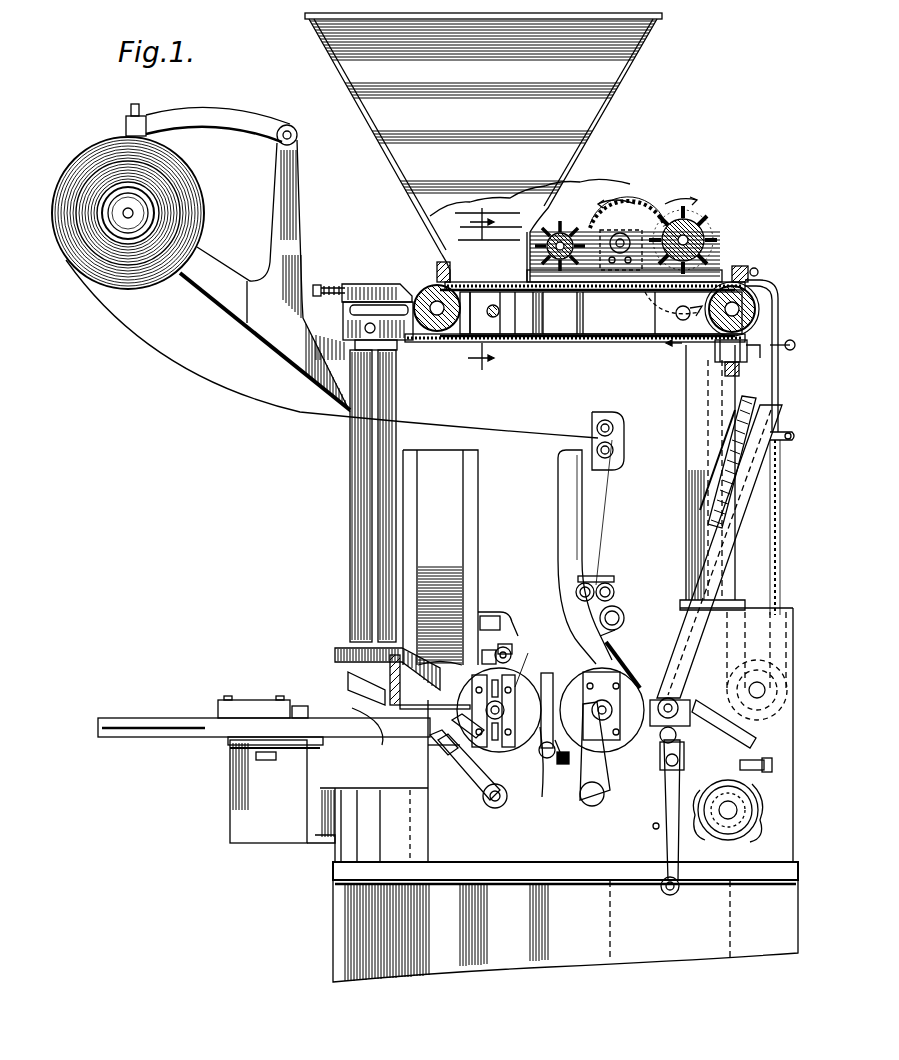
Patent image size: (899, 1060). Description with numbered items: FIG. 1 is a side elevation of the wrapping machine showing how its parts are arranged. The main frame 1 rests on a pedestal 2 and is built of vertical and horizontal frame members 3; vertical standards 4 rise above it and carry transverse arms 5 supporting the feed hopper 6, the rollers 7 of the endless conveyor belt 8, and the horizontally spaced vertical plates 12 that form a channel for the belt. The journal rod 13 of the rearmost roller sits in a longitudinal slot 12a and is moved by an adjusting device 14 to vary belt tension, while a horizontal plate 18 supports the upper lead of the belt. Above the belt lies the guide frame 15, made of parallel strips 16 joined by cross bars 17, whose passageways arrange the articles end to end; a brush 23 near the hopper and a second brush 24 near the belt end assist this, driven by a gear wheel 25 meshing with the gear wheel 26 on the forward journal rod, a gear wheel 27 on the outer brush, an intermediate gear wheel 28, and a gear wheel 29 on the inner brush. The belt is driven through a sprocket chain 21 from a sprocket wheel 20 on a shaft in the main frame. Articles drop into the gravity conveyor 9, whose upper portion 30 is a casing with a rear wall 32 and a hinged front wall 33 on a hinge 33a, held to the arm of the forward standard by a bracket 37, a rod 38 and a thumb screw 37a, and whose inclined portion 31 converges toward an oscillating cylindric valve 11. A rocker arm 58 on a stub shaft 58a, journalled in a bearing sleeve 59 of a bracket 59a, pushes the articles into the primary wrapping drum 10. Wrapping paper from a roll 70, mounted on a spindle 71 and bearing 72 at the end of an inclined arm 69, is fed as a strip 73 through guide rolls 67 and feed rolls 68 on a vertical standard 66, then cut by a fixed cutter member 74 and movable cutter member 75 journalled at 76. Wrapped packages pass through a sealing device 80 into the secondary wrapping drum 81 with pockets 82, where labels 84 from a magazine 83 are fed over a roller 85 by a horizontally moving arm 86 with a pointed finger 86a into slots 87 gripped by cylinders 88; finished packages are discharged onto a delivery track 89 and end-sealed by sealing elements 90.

The main frame 1 is at (432, 828).
The pedestal 2 is at (405, 968).
The frame members 3 is at (575, 292).
The vertical standards 4 is at (352, 500).
The transverse arms 5 is at (398, 342).
The feed hopper 6 is at (590, 126).
The rollers 7 is at (428, 340).
The conveyor belt 8 is at (555, 298).
The gravity conveyor 9 is at (770, 430).
The primary wrapping drum 10 is at (630, 735).
The oscillating cylindric valve 11 is at (676, 706).
The vertical plates 12 is at (352, 322).
The longitudinal slot 12a is at (372, 290).
The journal rod 13 is at (432, 295).
The adjusting device 14 is at (377, 292).
The guide frame 15 is at (510, 282).
The strips 16 is at (500, 300).
The cross bars 17 is at (463, 278).
The horizontal plate 18 is at (504, 311).
The sprocket wheel 20 is at (757, 666).
The sprocket chain 21 is at (778, 532).
The brush 23 is at (562, 228).
The brush 24 is at (690, 226).
The gear wheel 25 is at (672, 305).
The gear wheel 26 is at (740, 266).
The gear wheel 27 is at (705, 228).
The intermediate gear wheel 28 is at (633, 218).
The gear wheel 29 is at (588, 222).
The upper portion of gravity conveyor 30 is at (778, 360).
The inclined portion of gravity conveyor 31 is at (745, 490).
The rear wall 32 is at (760, 418).
The front wall 33 is at (780, 300).
The hinge 33a is at (778, 430).
The bracket 37 is at (716, 370).
The thumb screw 37a is at (725, 390).
The rod 38 is at (752, 365).
The rocker arm 58 is at (726, 772).
The stub shaft 58a is at (682, 884).
The bearing sleeve 59 is at (667, 892).
The bracket 59a is at (655, 824).
The vertical standard 66 is at (560, 522).
The guide rolls 67 is at (598, 445).
The feed rolls 68 is at (612, 590).
The inclined arm 69 is at (238, 304).
The roll of wrapping material 70 is at (185, 176).
The spindle 71 is at (140, 211).
The bearing 72 is at (128, 232).
The strip 73 is at (502, 444).
The fixed cutter member 74 is at (512, 656).
The movable cutter member 75 is at (634, 650).
The journal 76 is at (624, 616).
The sealing device 80 is at (562, 766).
The secondary wrapping drum 81 is at (520, 660).
The pockets 82 is at (516, 624).
The magazine 83 is at (468, 560).
The labels 84 is at (438, 572).
The roller 85 is at (440, 758).
The horizontally moving arm 86 is at (336, 655).
The pointed finger 86a is at (392, 680).
The slots 87 is at (478, 778).
The cylinders 88 is at (540, 752).
The delivery track 89 is at (384, 738).
The sealing elements 90 is at (300, 690).